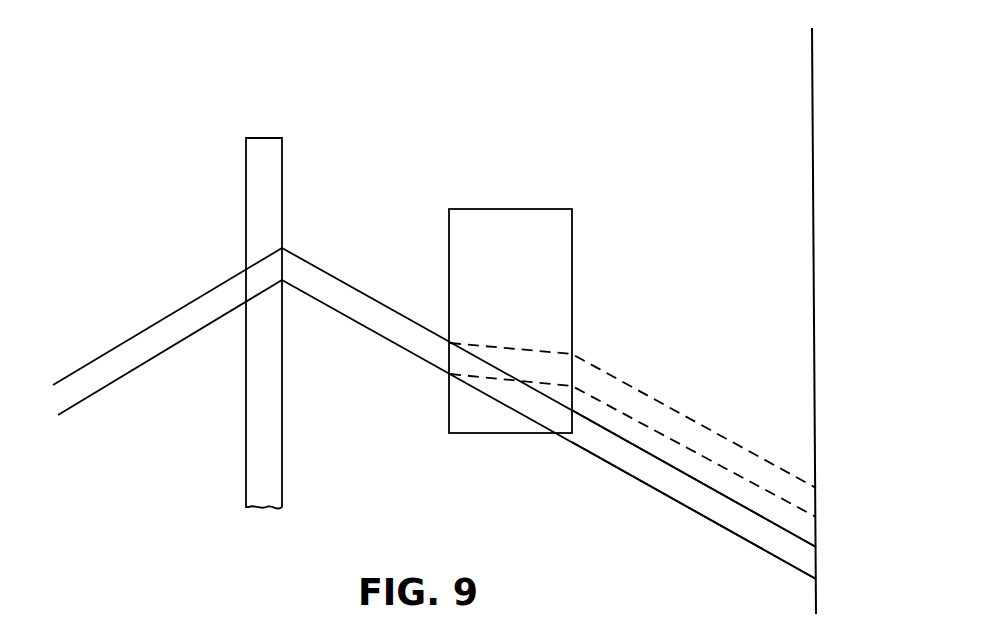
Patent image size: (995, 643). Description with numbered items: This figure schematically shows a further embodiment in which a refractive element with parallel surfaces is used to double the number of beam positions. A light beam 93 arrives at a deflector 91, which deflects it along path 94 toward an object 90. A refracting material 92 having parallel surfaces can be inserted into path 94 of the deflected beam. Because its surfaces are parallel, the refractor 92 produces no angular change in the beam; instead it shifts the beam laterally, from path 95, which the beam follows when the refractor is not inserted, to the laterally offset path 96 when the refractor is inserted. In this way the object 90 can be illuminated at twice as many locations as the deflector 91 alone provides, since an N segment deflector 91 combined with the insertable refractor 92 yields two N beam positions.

The object 90 is at (815, 218).
The deflector 91 is at (261, 138).
The refracting material 92 is at (473, 208).
The light beam 93 is at (109, 350).
The path 94 is at (375, 333).
The path 95 is at (693, 511).
The path 96 is at (658, 400).